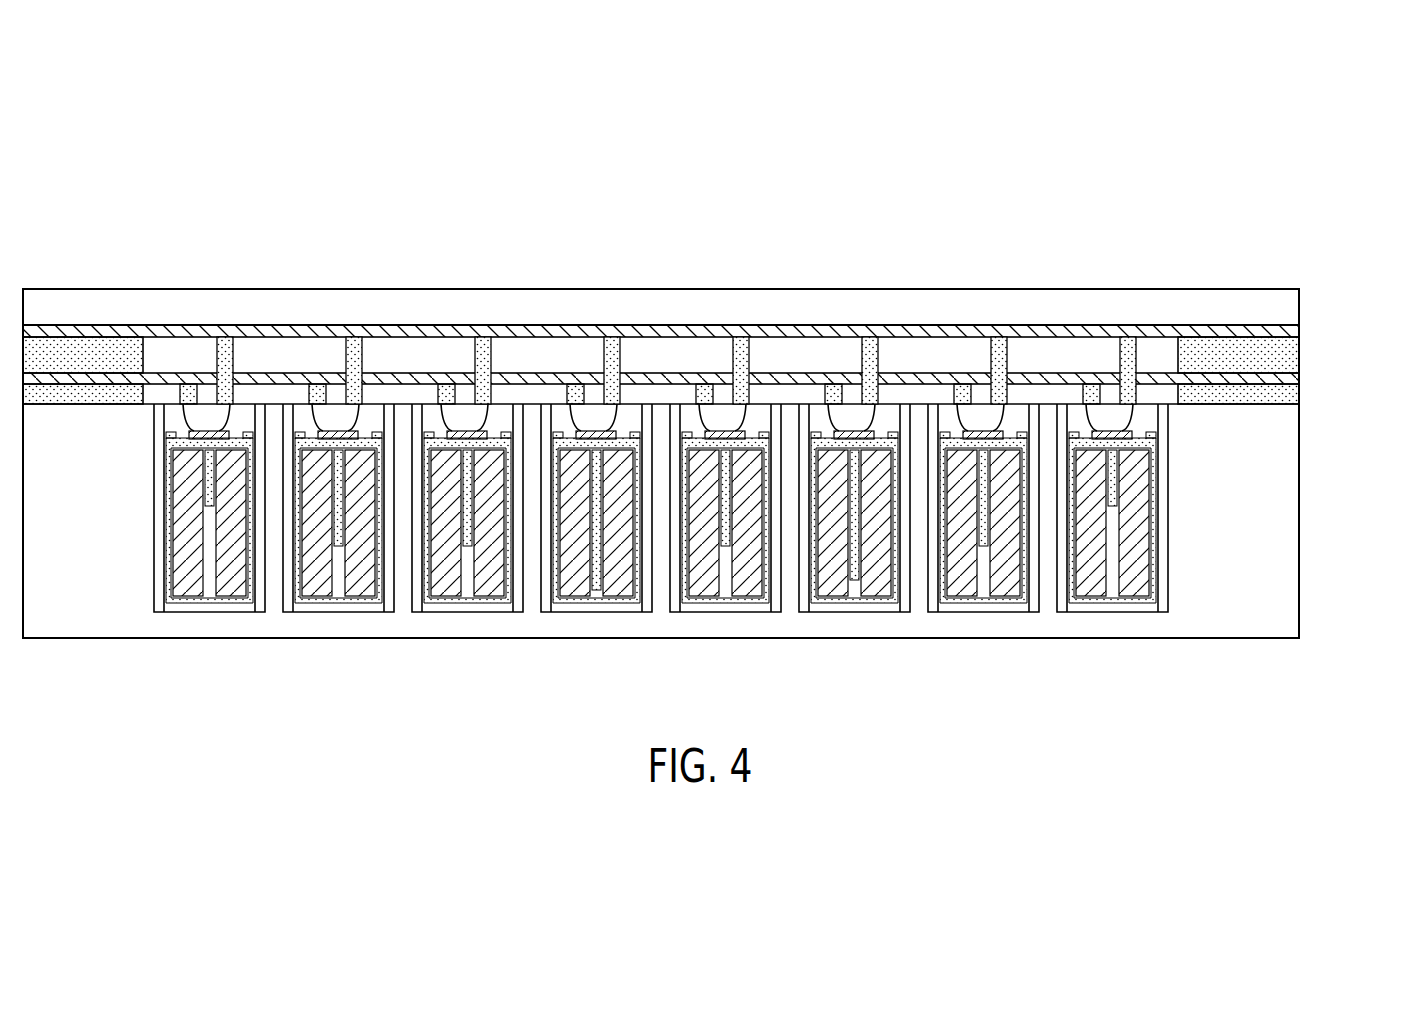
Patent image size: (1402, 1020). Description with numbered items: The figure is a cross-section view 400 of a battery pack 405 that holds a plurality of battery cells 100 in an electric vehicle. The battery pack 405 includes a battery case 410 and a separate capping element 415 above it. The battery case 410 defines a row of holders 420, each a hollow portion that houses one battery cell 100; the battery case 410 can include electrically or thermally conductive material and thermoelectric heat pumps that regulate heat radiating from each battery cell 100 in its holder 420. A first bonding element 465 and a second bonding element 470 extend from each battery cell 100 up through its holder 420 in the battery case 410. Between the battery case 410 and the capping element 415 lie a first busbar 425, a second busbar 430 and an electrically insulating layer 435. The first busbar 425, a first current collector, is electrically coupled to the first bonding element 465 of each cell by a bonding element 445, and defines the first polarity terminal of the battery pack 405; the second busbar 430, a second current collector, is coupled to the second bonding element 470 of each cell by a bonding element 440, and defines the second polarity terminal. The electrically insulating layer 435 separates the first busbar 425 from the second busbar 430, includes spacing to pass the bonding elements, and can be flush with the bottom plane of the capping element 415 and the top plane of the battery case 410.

The cross-section view 400 is at (630, 173).
The battery pack 405 is at (1032, 289).
The battery case 410 is at (1262, 503).
The capping element 415 is at (1265, 318).
The holder 420 is at (257, 614).
The first busbar 425 is at (1303, 332).
The second busbar 430 is at (1303, 378).
The electrically insulating layer 435 is at (100, 360).
The bonding element 440 is at (190, 375).
The bonding element 445 is at (228, 355).
The first bonding element 465 is at (188, 417).
The second bonding element 470 is at (208, 430).
The battery cell 100 is at (212, 614).